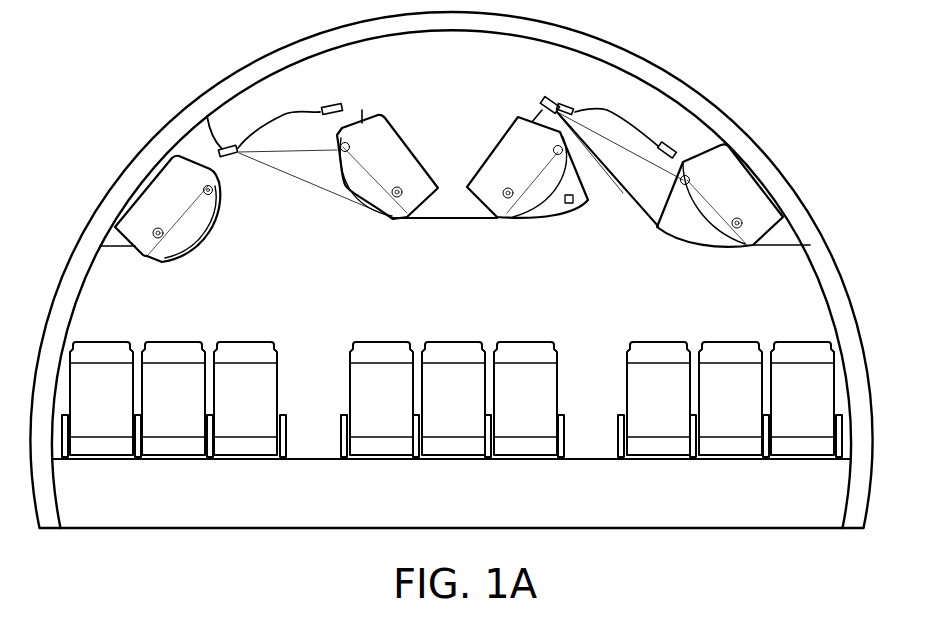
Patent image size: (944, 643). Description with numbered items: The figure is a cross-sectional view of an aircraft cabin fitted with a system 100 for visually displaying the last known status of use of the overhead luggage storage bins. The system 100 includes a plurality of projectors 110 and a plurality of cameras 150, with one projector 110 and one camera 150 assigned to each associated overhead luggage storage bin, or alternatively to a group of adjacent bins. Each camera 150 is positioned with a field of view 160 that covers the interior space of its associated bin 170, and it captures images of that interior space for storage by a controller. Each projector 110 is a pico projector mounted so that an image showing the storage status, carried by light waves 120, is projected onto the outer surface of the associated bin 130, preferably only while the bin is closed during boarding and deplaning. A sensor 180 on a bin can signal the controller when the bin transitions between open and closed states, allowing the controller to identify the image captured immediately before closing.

The system 100 is at (156, 107).
The projector 110 is at (226, 147).
The light waves 120 is at (332, 190).
The overhead luggage storage bin 130 is at (411, 196).
The camera 150 is at (222, 157).
The field of view 160 is at (622, 192).
The overhead luggage storage bin 170 is at (695, 235).
The sensor 180 is at (567, 205).